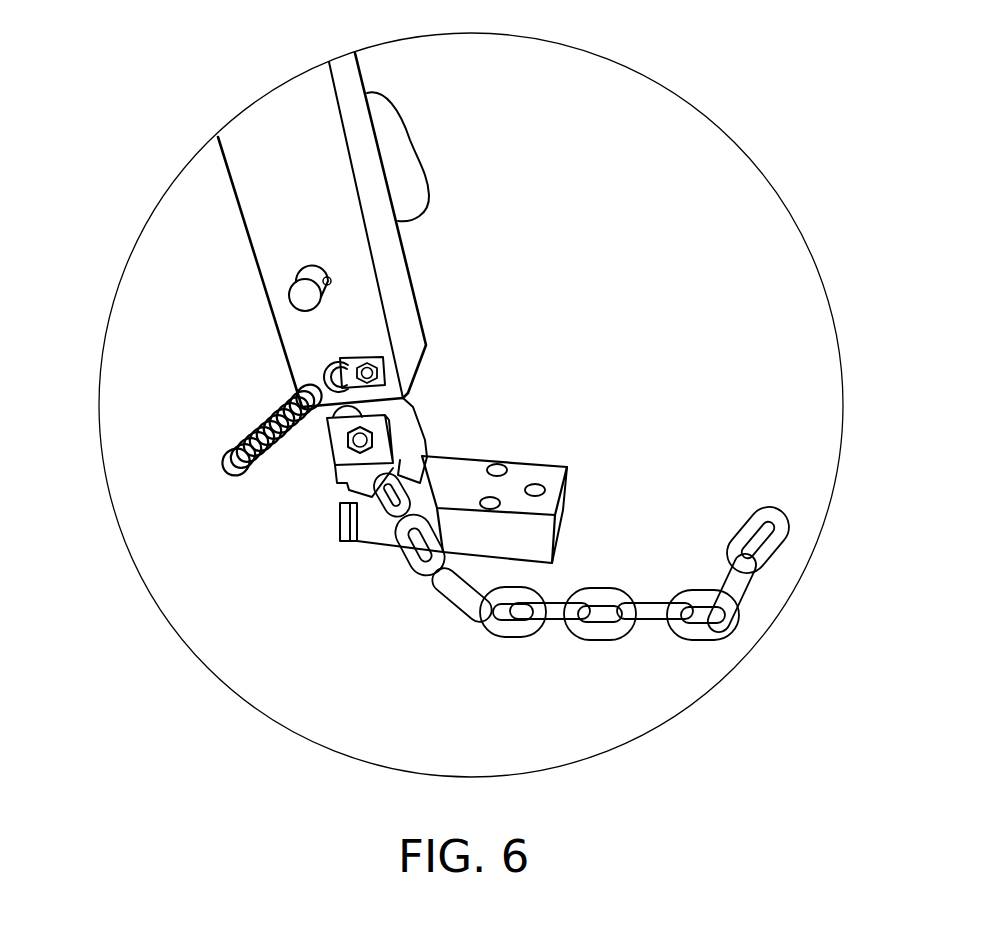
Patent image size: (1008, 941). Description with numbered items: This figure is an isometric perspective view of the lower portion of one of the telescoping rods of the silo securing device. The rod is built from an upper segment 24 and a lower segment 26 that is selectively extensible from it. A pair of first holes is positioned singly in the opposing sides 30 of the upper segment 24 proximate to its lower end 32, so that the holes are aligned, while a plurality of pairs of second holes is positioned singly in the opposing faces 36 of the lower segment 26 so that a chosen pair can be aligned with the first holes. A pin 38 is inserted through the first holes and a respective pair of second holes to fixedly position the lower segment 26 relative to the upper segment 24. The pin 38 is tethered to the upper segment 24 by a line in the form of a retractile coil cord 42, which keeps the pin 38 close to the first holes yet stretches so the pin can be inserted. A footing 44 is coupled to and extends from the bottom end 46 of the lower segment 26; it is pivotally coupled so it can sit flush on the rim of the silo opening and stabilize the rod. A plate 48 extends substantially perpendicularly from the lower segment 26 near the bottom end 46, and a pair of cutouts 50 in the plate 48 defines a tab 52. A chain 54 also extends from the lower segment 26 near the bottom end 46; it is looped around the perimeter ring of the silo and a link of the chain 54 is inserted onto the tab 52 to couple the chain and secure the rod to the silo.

The upper segment 24 is at (412, 277).
The lower segment 26 is at (420, 405).
The opposing sides 30 is at (270, 220).
The lower end 32 is at (427, 350).
The opposing faces 36 is at (377, 408).
The pin 38 is at (290, 285).
The retractile coil cord 42 is at (233, 448).
The footing 44 is at (558, 475).
The bottom end 46 is at (425, 428).
The plate 48 is at (337, 467).
The cutouts 50 is at (346, 497).
The tab 52 is at (357, 547).
The chain 54 is at (620, 637).